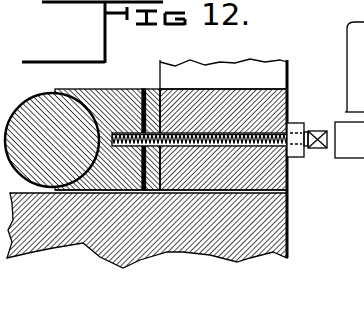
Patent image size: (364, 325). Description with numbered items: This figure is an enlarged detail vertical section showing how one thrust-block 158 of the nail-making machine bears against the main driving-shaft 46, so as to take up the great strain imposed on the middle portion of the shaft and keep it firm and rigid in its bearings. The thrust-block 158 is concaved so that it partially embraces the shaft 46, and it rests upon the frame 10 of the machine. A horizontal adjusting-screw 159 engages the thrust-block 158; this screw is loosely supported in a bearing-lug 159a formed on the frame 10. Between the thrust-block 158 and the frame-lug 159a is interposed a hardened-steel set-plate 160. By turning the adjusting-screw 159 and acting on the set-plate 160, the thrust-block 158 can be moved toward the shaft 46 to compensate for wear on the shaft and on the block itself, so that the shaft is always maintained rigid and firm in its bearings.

The base 10 is at (273, 247).
The roller 46 is at (33, 110).
The thrust-block 158 is at (105, 98).
The adjusting-screw 159 is at (243, 146).
The bearing-lug 159a is at (292, 82).
The set-plate 160 is at (149, 89).